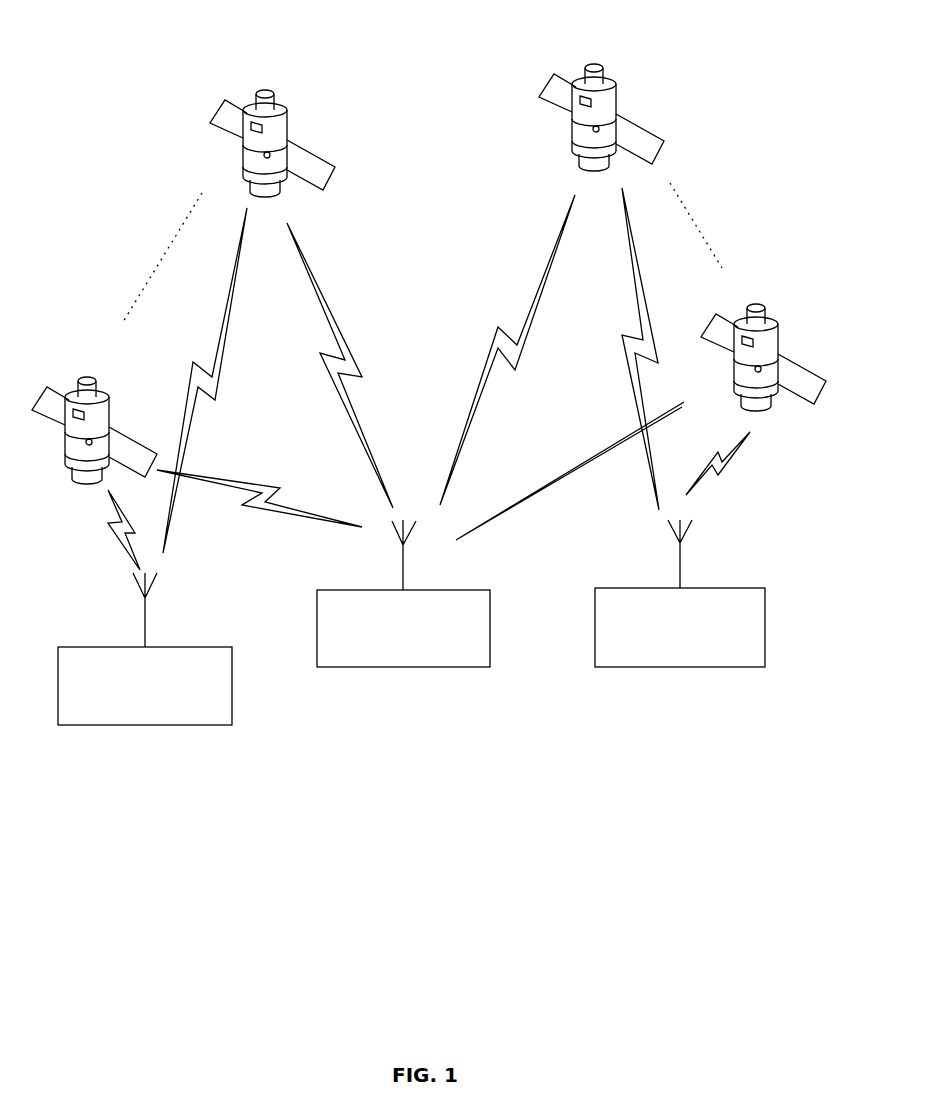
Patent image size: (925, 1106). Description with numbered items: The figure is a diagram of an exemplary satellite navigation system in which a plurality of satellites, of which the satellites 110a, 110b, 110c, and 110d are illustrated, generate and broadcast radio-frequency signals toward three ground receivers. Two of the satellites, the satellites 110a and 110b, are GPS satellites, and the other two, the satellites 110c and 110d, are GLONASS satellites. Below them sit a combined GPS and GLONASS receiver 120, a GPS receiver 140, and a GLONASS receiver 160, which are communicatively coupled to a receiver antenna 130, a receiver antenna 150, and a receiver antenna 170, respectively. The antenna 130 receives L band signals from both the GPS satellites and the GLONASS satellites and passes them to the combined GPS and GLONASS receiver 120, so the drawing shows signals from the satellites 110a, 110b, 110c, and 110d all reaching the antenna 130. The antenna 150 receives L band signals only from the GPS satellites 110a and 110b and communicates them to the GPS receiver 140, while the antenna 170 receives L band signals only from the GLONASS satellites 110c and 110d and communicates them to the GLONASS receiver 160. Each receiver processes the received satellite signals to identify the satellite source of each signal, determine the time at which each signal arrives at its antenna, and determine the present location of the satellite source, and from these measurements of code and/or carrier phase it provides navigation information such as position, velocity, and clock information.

The satellite 110a is at (109, 409).
The satellite 110b is at (244, 164).
The satellite 110c is at (573, 120).
The satellite 110d is at (732, 357).
The combined GPS and GLONASS receiver 120 is at (490, 590).
The receiver antenna 130 is at (405, 542).
The GPS receiver 140 is at (232, 648).
The receiver antenna 150 is at (145, 600).
The GLONASS receiver 160 is at (765, 590).
The receiver antenna 170 is at (682, 542).